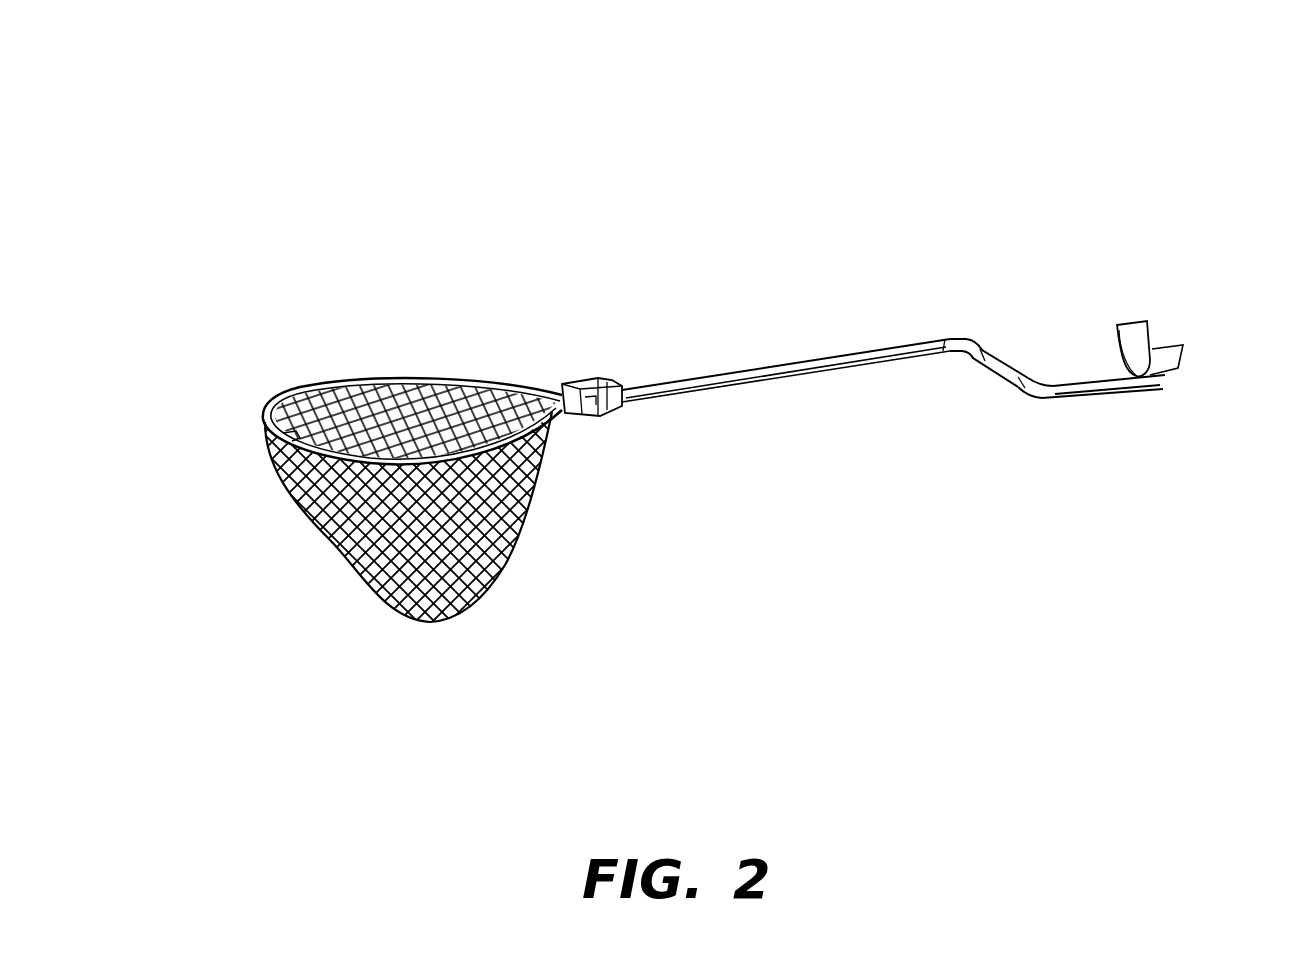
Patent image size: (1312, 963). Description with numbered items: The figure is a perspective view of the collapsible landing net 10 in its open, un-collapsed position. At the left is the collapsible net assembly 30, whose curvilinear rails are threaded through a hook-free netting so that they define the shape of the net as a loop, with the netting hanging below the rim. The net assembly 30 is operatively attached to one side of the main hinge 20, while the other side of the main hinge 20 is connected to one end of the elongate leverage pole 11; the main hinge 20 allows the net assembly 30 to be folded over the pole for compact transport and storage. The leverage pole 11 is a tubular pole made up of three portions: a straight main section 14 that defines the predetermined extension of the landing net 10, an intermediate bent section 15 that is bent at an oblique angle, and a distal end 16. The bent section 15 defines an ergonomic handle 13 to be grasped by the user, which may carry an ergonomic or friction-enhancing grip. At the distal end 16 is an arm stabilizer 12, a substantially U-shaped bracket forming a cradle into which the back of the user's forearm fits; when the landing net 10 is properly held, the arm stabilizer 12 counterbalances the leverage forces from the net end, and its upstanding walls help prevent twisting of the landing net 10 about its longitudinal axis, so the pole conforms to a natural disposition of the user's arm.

The collapsible landing net 10 is at (268, 102).
The leverage pole 11 is at (767, 349).
The arm stabilizer 12 is at (1184, 355).
The ergonomic handle 13 is at (1006, 362).
The main section 14 is at (817, 387).
The bent section 15 is at (973, 338).
The distal end 16 is at (1087, 394).
The main hinge 20 is at (580, 344).
The collapsible net assembly 30 is at (314, 346).